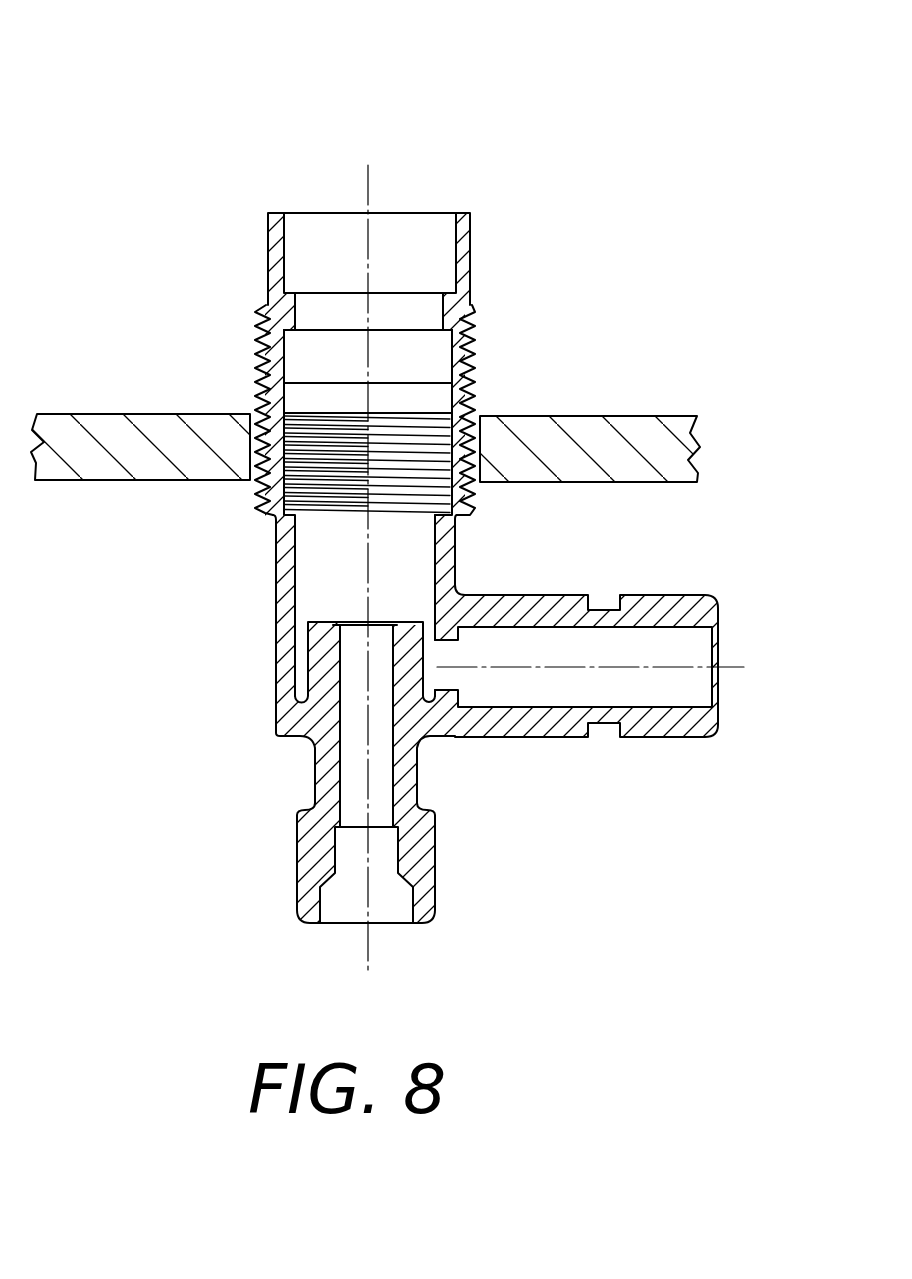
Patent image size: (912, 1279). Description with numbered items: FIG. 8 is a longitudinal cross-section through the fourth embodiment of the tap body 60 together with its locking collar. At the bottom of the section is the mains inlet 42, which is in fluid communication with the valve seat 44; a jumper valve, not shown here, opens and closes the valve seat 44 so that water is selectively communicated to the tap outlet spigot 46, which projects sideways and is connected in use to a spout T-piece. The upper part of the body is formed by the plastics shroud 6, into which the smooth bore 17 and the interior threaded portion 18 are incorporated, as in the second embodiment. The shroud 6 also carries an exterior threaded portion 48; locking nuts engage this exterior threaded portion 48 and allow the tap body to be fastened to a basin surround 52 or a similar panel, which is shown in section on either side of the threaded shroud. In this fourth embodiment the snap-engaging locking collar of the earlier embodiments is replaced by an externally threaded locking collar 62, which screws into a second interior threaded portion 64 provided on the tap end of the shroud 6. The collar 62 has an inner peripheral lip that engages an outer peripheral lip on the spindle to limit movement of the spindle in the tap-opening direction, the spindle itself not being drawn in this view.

The tap body 60 is at (224, 152).
The externally threaded locking collar 62 is at (475, 237).
The second interior threaded portion 64 is at (435, 332).
The exterior threaded portion 48 is at (478, 360).
The basin surround 52 is at (92, 460).
The interior threaded portion 18 is at (318, 484).
The smooth bore 17 is at (438, 540).
The plastics shroud 6 is at (272, 613).
The valve seat 44 is at (350, 622).
The tap outlet spigot 46 is at (692, 645).
The mains inlet 42 is at (346, 905).